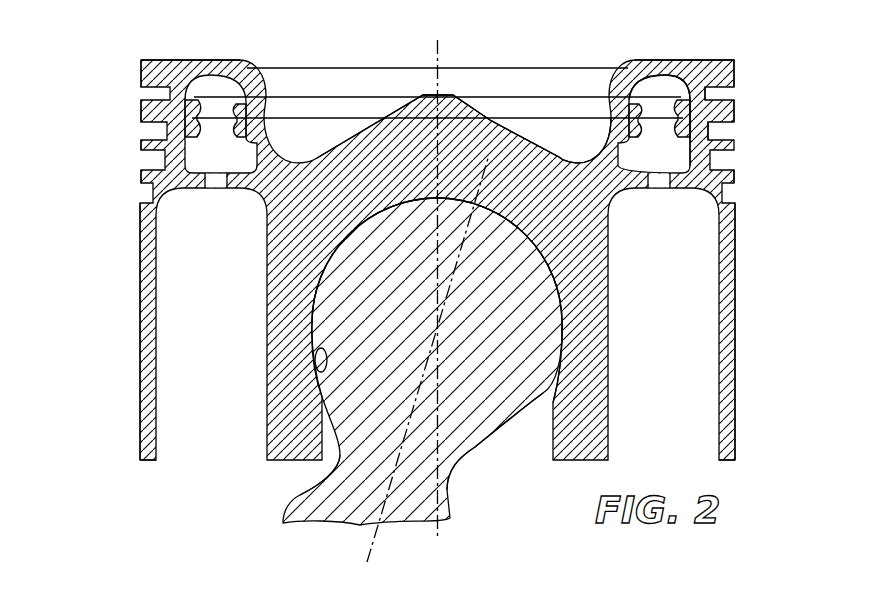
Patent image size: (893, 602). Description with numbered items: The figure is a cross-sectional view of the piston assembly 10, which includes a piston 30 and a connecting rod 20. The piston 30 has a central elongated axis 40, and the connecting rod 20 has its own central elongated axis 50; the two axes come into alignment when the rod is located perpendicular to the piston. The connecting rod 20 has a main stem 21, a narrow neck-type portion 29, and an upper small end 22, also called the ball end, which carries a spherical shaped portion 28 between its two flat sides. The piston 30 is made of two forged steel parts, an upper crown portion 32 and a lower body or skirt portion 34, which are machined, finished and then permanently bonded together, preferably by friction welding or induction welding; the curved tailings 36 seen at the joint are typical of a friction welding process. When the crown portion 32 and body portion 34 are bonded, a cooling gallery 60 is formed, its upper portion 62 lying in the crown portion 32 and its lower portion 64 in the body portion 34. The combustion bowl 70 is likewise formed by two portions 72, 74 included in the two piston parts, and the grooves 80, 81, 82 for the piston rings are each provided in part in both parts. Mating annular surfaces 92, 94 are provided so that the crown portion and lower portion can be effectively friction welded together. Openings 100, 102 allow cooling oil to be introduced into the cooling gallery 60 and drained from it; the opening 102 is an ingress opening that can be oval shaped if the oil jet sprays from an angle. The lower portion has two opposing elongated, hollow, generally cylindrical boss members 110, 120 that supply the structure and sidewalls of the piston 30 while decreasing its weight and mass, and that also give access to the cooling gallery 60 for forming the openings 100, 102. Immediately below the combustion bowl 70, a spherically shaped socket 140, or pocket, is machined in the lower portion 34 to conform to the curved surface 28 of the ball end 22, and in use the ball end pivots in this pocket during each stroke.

The assembly 10 is at (163, 478).
The connecting rod 20 is at (443, 505).
The main stem 21 is at (292, 516).
The small end 22 is at (362, 250).
The spherical shaped portion 28 is at (540, 250).
The neck-type portion 29 is at (460, 462).
The piston 30 is at (735, 285).
The crown portion 32 is at (142, 66).
The body portion 34 is at (146, 358).
The curved tailings 36 is at (237, 110).
The central elongated axis 40 is at (440, 46).
The central elongated axis 50 is at (370, 544).
The cooling gallery 60 is at (710, 132).
The upper portion 62 is at (708, 70).
The lower portion 64 is at (680, 152).
The combustion bowl 70 is at (507, 100).
The bowl portion 72 is at (622, 88).
The bowl portion 74 is at (590, 150).
The groove 80 is at (143, 107).
The groove 81 is at (143, 147).
The groove 82 is at (143, 176).
The mating annular surface 92 is at (622, 112).
The mating annular surface 94 is at (737, 103).
The opening 100 is at (214, 189).
The ingress opening 102 is at (659, 189).
The boss member 110 is at (734, 425).
The boss member 120 is at (148, 438).
The socket 140 is at (302, 369).